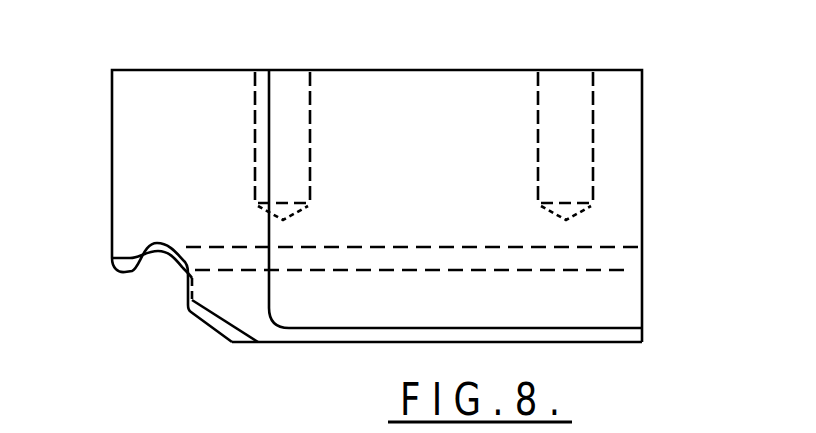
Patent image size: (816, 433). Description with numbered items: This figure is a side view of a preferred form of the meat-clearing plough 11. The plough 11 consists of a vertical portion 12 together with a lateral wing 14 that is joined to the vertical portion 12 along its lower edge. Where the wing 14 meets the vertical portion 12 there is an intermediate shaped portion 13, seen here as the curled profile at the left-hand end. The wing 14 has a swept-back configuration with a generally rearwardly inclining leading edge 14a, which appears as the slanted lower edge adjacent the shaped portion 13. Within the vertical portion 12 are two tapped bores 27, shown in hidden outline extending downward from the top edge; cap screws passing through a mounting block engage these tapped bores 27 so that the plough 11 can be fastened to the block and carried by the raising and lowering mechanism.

The plough 11 is at (98, 81).
The vertical portion 12 is at (620, 137).
The intermediate shaped portion 13 is at (162, 267).
The lateral wing 14 is at (551, 328).
The leading edge 14a is at (218, 322).
The tapped bores 27 is at (258, 97).